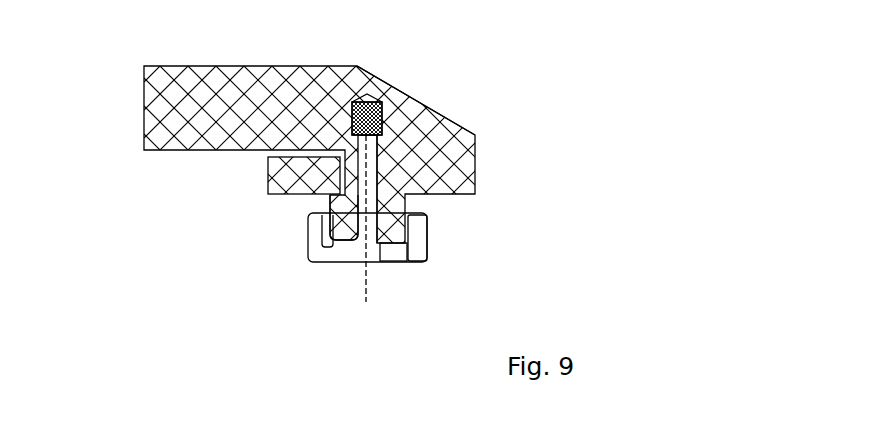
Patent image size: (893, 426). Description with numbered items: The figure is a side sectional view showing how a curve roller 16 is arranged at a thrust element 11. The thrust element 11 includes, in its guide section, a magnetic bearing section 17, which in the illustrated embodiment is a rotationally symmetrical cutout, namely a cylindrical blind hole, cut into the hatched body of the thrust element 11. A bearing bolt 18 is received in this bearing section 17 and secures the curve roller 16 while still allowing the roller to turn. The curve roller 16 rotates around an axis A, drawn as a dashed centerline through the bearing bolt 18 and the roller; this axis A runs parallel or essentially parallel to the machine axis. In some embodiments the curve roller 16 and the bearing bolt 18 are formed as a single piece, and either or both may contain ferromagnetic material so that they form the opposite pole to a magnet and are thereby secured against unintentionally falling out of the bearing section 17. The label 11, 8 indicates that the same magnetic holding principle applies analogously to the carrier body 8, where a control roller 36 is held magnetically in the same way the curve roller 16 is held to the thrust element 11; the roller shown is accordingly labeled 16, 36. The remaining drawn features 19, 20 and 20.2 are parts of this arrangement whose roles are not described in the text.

The thrust element 11 is at (203, 131).
The carrier body 8 is at (201, 233).
The sloped surface 19 is at (404, 94).
The bearing bolt 18 is at (357, 156).
The magnetic bearing section 17 is at (394, 159).
The locking projection 20.2 is at (317, 203).
The curve roller 16 is at (423, 259).
The control roller 36 is at (437, 281).
The clip leg 20 is at (426, 219).
The axis A is at (362, 305).